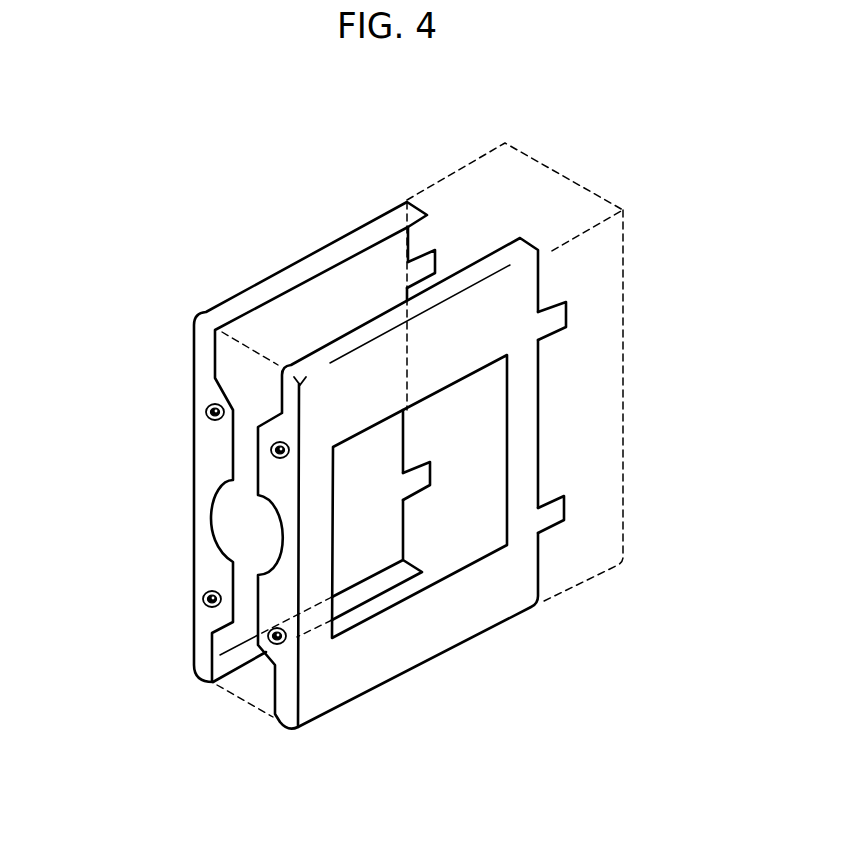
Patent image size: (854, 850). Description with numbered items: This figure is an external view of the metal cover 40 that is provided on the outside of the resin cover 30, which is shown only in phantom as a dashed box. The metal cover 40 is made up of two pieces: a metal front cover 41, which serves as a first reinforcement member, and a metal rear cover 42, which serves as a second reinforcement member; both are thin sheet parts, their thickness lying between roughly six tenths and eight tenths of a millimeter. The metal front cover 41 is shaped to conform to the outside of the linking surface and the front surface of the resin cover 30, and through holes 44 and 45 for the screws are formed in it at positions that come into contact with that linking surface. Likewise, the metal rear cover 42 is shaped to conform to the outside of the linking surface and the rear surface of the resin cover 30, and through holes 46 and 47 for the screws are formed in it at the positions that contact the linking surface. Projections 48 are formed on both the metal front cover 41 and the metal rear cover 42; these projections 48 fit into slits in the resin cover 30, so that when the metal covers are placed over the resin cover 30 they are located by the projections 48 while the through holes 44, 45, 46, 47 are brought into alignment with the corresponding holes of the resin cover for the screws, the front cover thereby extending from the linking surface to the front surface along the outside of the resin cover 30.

The resin cover 30 is at (590, 578).
The metal cover 40 is at (357, 172).
The metal front cover 41 is at (247, 297).
The metal rear cover 42 is at (403, 633).
The through hole 44 is at (206, 412).
The through hole 45 is at (203, 599).
The through hole 46 is at (271, 451).
The through hole 47 is at (268, 637).
The projections 48 is at (437, 262).